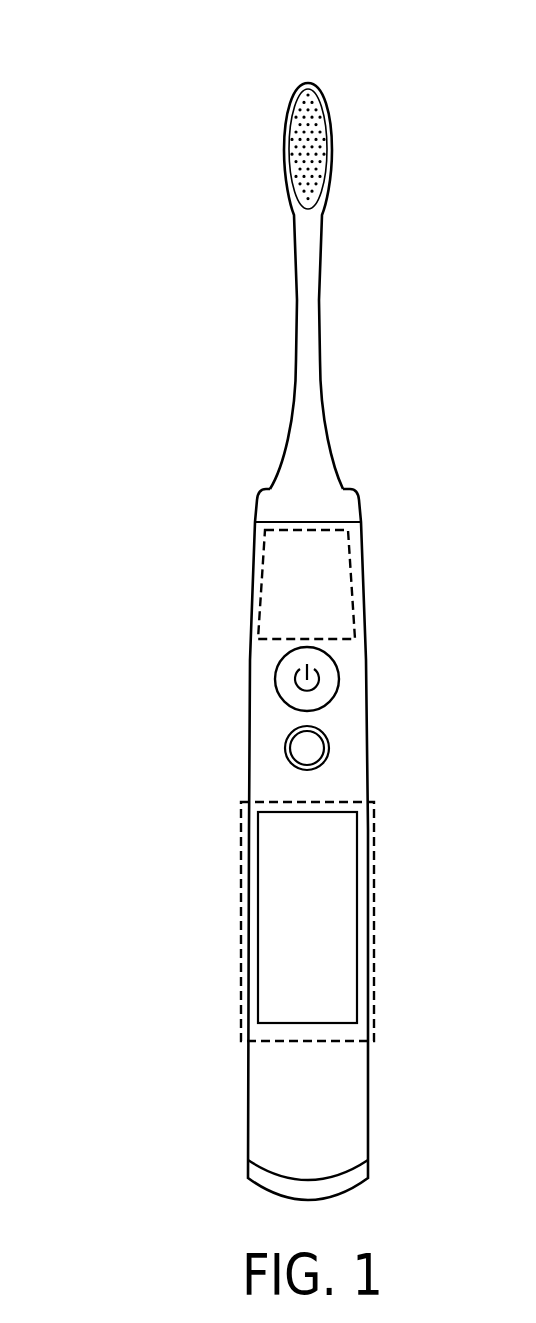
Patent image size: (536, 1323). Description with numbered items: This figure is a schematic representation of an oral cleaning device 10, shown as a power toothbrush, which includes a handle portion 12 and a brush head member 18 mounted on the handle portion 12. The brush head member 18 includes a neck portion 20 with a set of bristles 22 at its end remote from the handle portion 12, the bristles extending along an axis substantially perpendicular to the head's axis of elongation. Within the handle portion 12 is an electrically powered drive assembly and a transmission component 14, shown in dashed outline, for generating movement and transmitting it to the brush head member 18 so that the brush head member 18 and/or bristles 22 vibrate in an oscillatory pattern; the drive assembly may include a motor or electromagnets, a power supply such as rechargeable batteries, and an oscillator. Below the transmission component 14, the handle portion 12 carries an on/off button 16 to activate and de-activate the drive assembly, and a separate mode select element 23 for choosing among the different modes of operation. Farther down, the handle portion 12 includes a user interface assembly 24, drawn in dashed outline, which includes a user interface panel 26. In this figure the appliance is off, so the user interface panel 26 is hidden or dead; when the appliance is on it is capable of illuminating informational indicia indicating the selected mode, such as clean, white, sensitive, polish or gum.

The oral cleaning device 10 is at (112, 99).
The handle portion 12 is at (369, 785).
The transmission component 14 is at (341, 577).
The on/off button 16 is at (341, 681).
The brush head member 18 is at (242, 85).
The neck portion 20 is at (330, 331).
The bristles 22 is at (328, 146).
The mode select element 23 is at (330, 747).
The user interface assembly 24 is at (375, 847).
The user interface panel 26 is at (358, 967).